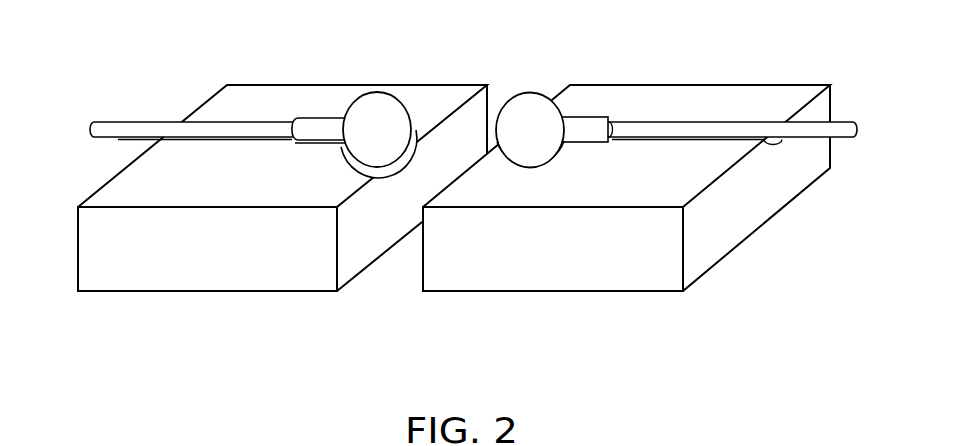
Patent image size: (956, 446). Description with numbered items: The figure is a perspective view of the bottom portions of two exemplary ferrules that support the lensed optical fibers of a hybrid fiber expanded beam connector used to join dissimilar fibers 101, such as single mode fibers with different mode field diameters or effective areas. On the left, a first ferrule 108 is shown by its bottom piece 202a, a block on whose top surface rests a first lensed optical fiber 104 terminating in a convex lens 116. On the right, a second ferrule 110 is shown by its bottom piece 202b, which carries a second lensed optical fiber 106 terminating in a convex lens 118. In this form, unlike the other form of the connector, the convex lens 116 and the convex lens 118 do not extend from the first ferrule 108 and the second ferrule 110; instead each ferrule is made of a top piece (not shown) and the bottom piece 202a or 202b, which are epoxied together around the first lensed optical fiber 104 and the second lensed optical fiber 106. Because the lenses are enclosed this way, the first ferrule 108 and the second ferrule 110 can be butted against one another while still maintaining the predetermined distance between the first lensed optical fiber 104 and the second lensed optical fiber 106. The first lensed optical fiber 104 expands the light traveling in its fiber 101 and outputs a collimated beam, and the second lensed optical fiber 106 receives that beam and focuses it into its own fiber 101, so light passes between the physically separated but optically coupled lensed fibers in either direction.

The fiber 101 is at (158, 121).
The first lensed optical fiber 104 is at (359, 118).
The second lensed optical fiber 106 is at (552, 112).
The first ferrule 108 is at (282, 171).
The second ferrule 110 is at (626, 170).
The convex lens 116 is at (391, 138).
The convex lens 118 is at (547, 140).
The bottom piece 202a is at (288, 187).
The bottom piece 202b is at (665, 187).